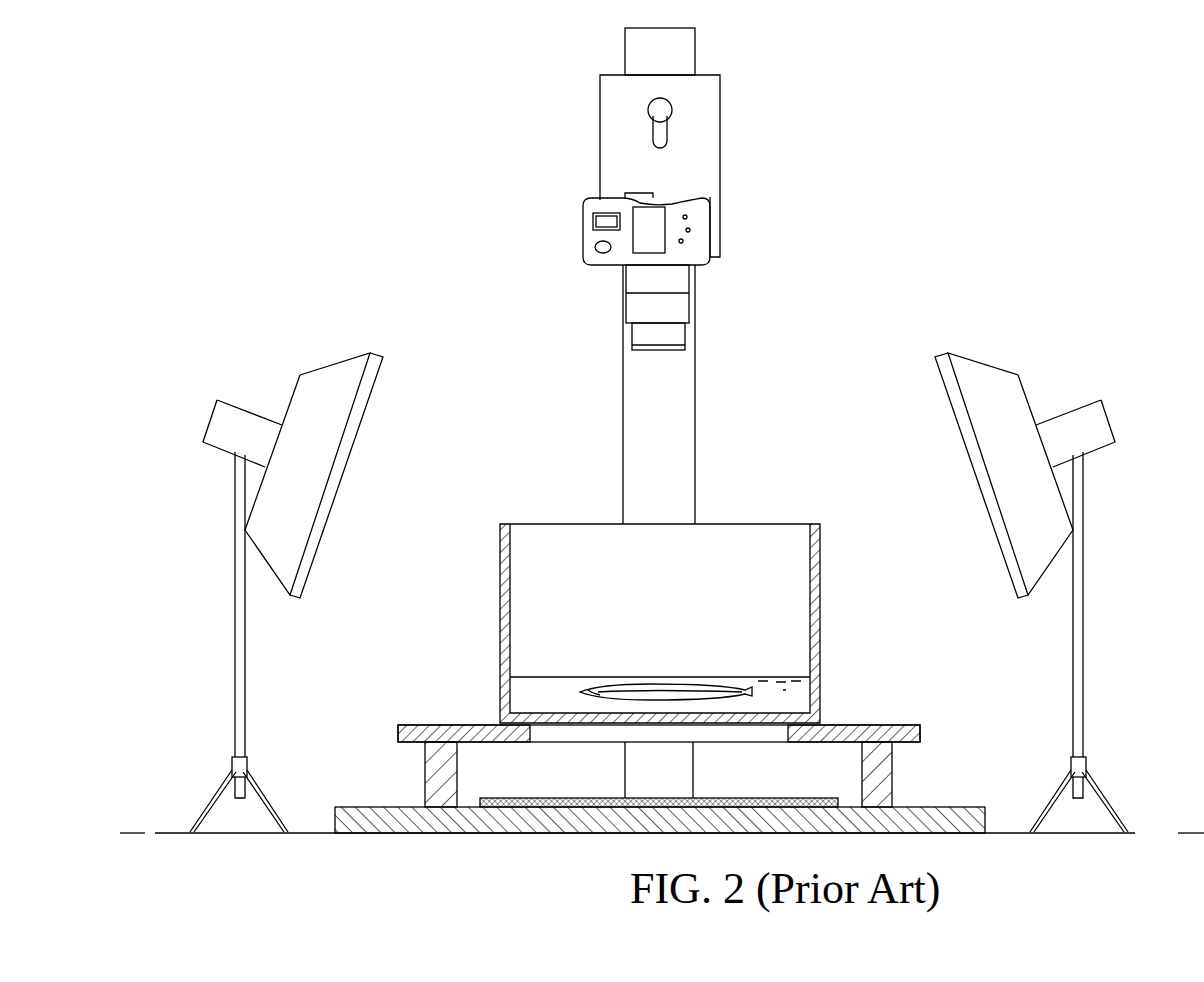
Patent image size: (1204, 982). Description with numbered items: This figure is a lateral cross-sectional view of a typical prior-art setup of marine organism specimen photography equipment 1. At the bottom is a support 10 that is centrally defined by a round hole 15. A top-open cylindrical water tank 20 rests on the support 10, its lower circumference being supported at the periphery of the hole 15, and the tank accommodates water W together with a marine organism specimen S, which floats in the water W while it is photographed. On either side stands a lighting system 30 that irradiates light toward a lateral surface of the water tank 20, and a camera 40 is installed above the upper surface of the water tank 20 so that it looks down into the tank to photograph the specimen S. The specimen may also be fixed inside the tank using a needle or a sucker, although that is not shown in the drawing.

The marine organism specimen photography equipment 1 is at (363, 93).
The support 10 is at (885, 727).
The round hole 15 is at (592, 740).
The water tank 20 is at (500, 575).
The lighting system 30 is at (358, 440).
The camera 40 is at (632, 302).
The water W is at (527, 698).
The marine organism specimen S is at (747, 690).